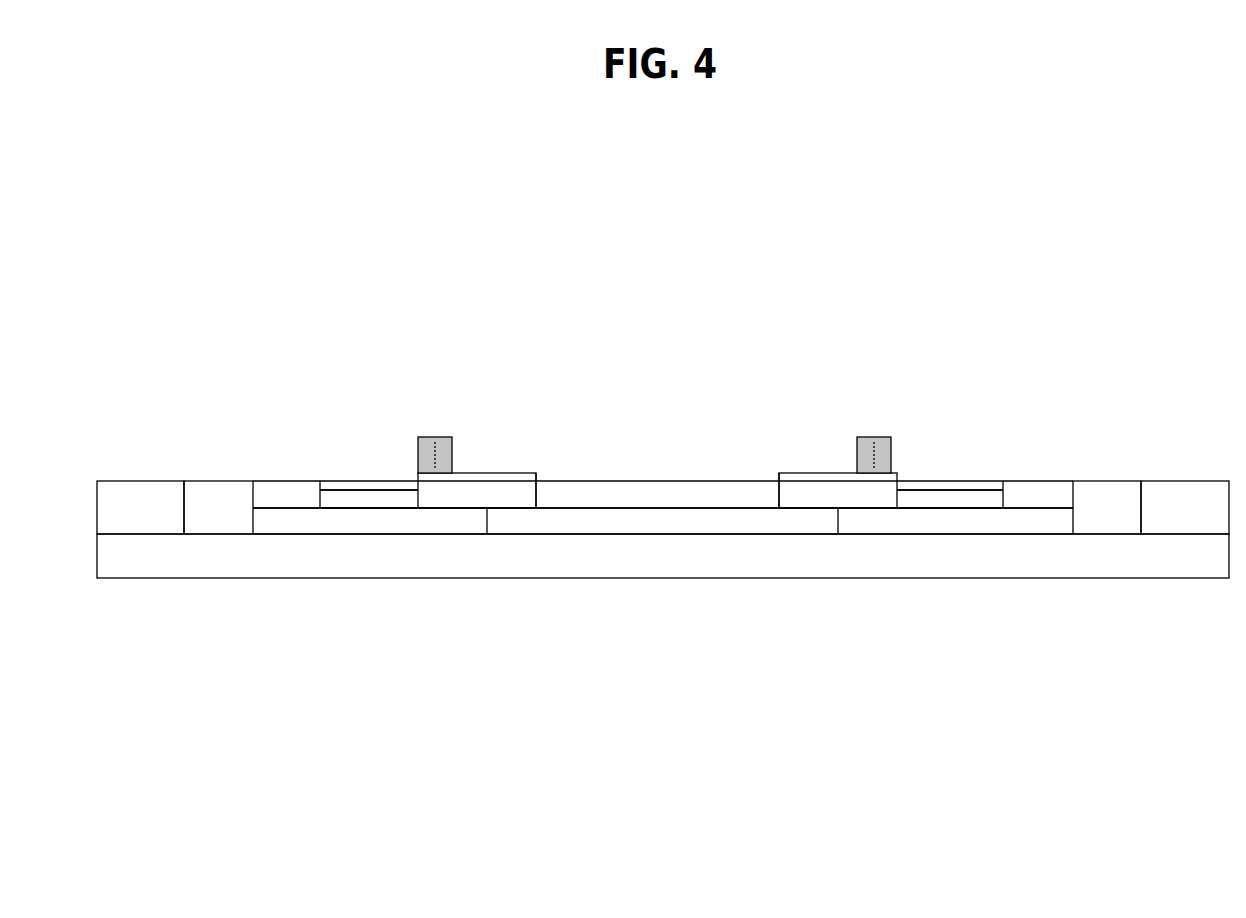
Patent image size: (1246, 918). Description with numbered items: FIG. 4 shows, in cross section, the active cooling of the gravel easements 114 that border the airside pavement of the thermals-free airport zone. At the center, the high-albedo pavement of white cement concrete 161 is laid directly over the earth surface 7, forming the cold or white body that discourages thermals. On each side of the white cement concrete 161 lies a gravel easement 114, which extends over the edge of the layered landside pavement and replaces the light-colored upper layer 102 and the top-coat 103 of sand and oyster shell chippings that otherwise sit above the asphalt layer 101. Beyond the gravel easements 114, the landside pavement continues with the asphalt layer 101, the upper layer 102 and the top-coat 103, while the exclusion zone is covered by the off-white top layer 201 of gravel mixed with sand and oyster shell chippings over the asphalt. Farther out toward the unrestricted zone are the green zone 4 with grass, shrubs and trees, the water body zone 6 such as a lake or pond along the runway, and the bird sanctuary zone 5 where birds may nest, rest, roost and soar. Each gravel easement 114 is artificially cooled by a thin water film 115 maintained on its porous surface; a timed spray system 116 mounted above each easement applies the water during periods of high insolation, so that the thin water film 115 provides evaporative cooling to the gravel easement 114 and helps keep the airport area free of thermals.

The green zone 4 is at (127, 492).
The bird sanctuary zone 5 is at (1208, 497).
The water body zone 6 is at (193, 492).
The earth surface 7 is at (388, 560).
The asphalt layer 101 is at (1005, 523).
The upper layer 102 is at (358, 495).
The top-coat 103 is at (330, 481).
The gravel easement 114 is at (525, 498).
The thin water film 115 is at (532, 470).
The timed spray system 116 is at (430, 437).
The white cement concrete 161 is at (687, 510).
The top layer 201 is at (273, 481).